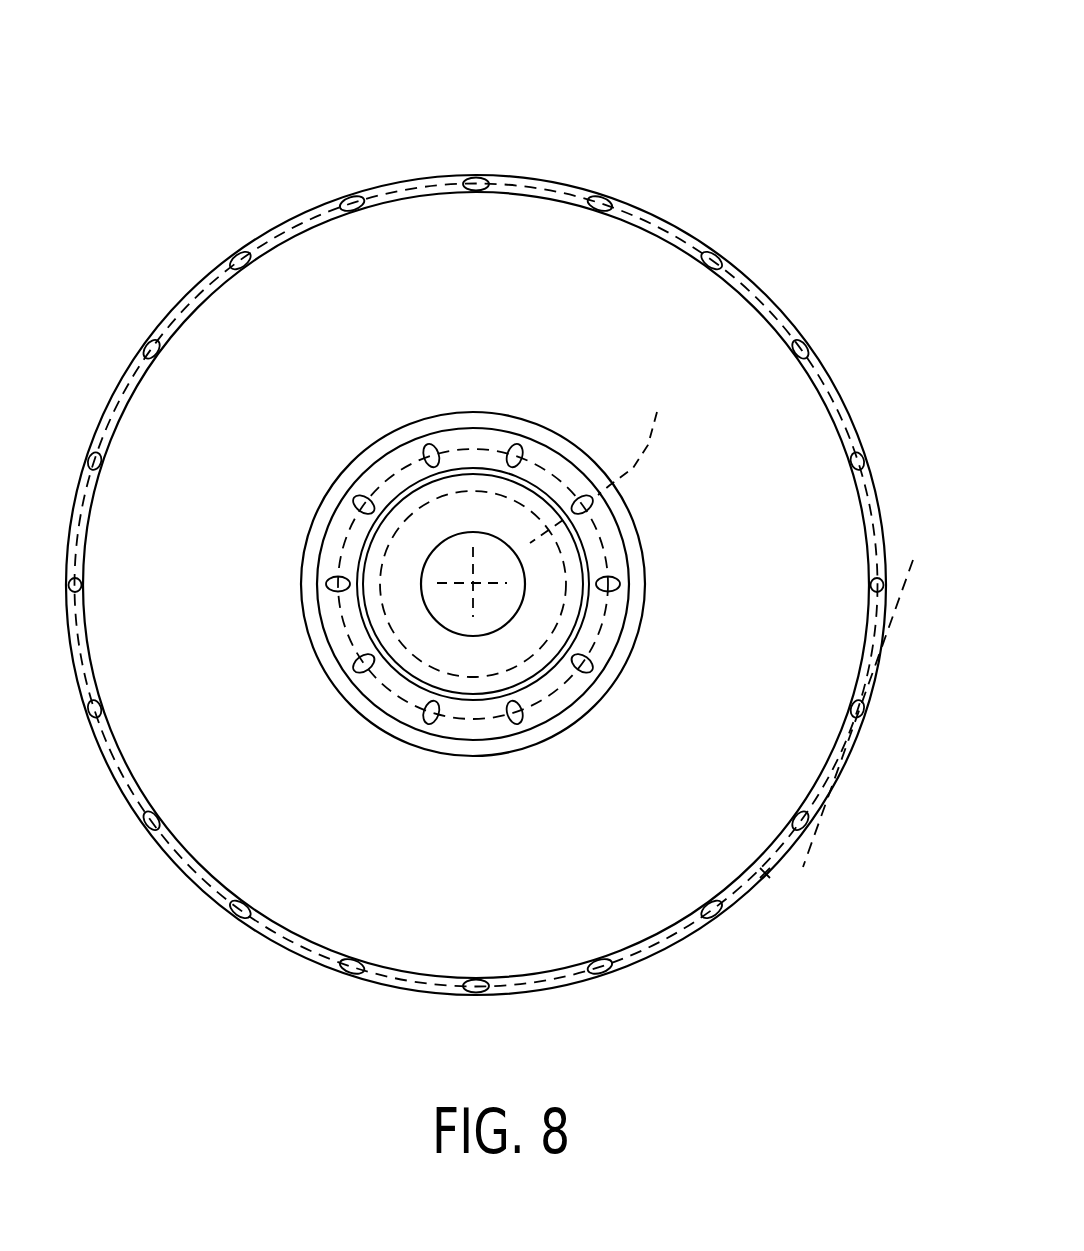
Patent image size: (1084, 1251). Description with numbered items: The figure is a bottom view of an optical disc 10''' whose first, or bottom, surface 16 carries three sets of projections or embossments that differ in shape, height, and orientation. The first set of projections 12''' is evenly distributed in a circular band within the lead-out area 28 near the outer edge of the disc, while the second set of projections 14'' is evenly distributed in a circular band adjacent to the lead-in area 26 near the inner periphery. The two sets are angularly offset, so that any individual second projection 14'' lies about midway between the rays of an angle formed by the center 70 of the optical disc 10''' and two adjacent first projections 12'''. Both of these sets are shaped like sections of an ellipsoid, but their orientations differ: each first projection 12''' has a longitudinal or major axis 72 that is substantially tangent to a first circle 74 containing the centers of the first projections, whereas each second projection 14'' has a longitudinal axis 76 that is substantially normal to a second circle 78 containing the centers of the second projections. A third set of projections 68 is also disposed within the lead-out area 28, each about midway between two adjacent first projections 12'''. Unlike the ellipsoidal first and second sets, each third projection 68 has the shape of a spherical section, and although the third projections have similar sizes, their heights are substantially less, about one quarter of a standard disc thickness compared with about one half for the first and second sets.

The optical disc 10''' is at (730, 52).
The first set of projections 12''' is at (513, 629).
The second set of projections 14'' is at (474, 586).
The first surface 16 is at (630, 932).
The lead-in area 26 is at (627, 647).
The lead-out area 28 is at (192, 872).
The third set of projections 68 is at (805, 343).
The center 70 is at (471, 593).
The longitudinal axis 72 is at (812, 840).
The first circle 74 is at (763, 870).
The longitudinal axis 76 is at (601, 462).
The second circle 78 is at (618, 542).